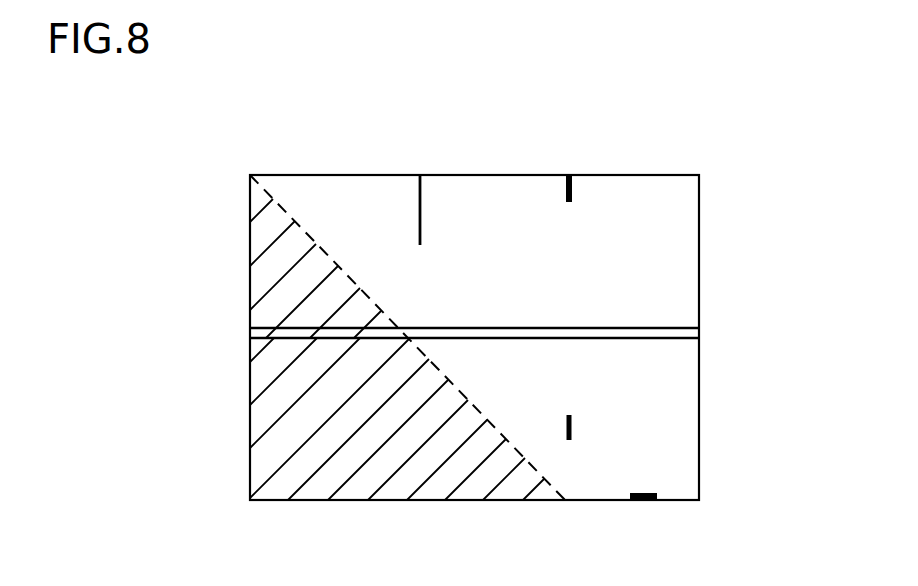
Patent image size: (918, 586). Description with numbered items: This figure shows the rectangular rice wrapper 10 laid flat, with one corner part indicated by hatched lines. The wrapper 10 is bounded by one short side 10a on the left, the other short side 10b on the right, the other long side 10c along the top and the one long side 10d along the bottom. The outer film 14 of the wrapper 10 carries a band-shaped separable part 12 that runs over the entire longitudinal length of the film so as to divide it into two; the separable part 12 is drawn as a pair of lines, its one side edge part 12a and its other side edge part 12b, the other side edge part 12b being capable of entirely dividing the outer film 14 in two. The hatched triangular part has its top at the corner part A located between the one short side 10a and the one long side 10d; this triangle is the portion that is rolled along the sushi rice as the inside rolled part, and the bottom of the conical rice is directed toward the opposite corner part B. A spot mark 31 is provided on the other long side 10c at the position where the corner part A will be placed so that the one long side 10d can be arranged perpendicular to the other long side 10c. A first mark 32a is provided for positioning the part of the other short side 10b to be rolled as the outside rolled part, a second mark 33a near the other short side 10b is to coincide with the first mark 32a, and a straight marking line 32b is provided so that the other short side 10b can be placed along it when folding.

The wrapper 10 is at (658, 157).
The one short side 10a is at (283, 247).
The other short side 10b is at (702, 428).
The other long side 10c is at (463, 174).
The one long side 10d is at (476, 483).
The separable part 12 is at (482, 313).
The one side edge part 12a is at (277, 329).
The other side edge part 12b is at (276, 340).
The outer film 14 is at (268, 421).
The spot mark 31 is at (574, 186).
The first mark 32a is at (573, 426).
The marking line 32b is at (418, 190).
The second mark 33a is at (644, 500).
The corner part A is at (290, 478).
The corner part B is at (297, 163).